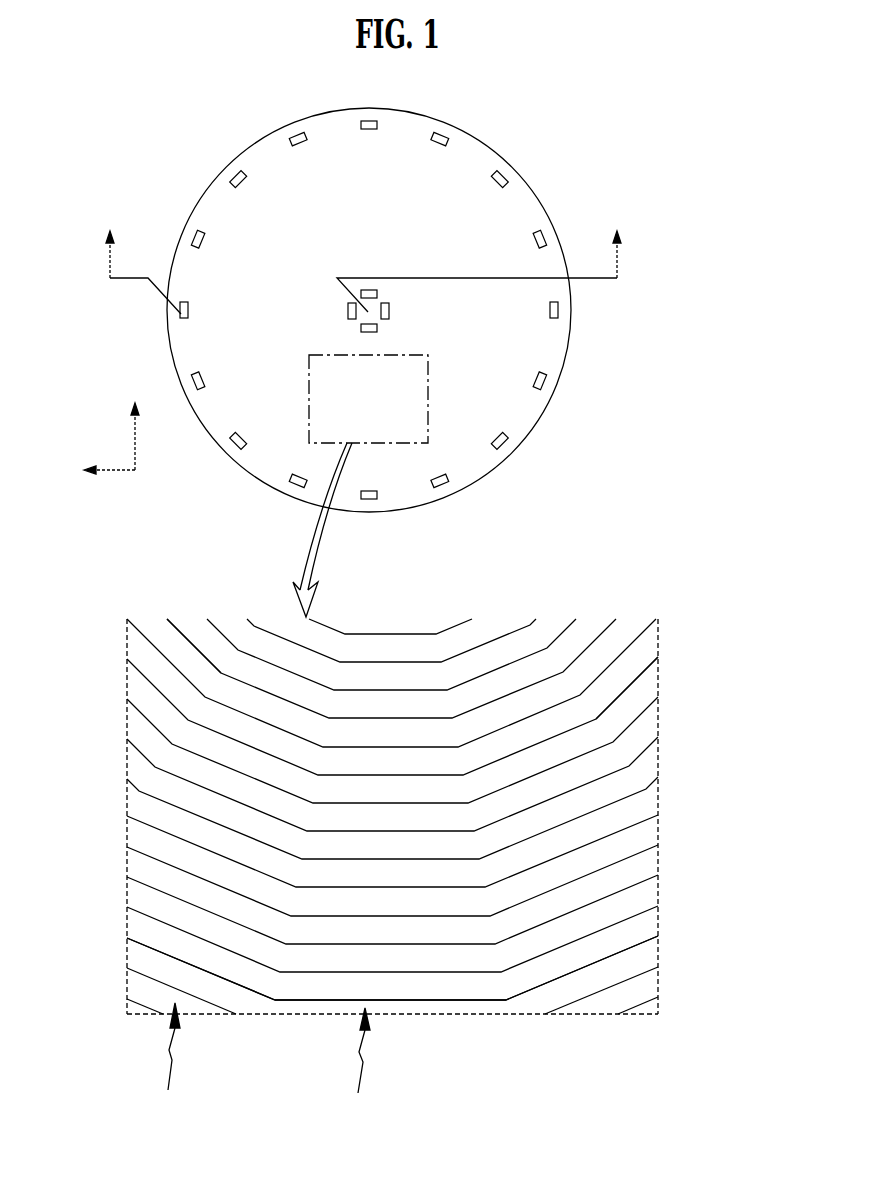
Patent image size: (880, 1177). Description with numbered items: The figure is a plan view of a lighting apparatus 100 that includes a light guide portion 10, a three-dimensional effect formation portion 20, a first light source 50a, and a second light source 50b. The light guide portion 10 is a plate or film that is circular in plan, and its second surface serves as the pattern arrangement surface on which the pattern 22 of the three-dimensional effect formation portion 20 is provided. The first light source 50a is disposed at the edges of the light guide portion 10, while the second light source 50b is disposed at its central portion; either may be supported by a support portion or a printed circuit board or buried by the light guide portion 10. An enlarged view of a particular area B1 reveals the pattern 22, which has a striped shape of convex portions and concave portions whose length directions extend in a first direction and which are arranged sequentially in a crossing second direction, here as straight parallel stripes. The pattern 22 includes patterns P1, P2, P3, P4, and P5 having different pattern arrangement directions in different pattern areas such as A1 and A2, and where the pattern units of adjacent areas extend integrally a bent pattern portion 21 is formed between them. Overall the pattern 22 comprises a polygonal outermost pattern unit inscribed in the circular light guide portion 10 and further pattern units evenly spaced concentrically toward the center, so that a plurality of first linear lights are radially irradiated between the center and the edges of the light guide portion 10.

The lighting apparatus 100 is at (188, 152).
The light guide portion 10 is at (478, 150).
The first light source 50a is at (504, 176).
The second light source 50b is at (390, 313).
The three-dimensional effect formation portion 20 is at (435, 828).
The bent pattern portion 21 is at (238, 650).
The pattern 22 is at (628, 830).
The pattern P1 is at (477, 1003).
The pattern P2 is at (236, 988).
The pattern P3 is at (648, 945).
The pattern P4 is at (190, 637).
The pattern P5 is at (640, 688).
The pattern area A1 is at (356, 1061).
The pattern area A2 is at (168, 1057).
The particular area B1 is at (643, 622).